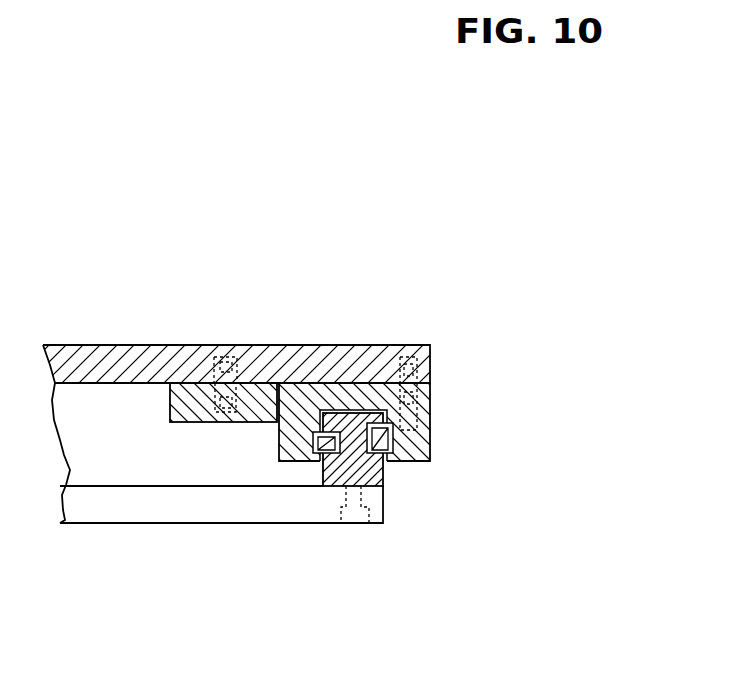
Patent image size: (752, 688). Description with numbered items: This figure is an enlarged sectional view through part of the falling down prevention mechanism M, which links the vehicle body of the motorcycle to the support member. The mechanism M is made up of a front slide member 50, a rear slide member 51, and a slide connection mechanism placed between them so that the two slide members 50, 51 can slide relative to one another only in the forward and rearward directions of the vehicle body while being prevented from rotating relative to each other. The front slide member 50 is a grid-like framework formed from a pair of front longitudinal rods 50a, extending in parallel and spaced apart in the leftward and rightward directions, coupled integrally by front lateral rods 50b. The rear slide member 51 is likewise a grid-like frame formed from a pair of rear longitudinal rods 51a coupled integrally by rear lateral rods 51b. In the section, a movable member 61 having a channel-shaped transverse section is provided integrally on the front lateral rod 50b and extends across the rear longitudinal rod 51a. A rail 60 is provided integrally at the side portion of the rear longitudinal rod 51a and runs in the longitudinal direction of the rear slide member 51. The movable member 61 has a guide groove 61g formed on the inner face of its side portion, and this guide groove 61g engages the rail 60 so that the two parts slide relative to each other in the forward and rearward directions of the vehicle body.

The falling down prevention mechanism M is at (355, 228).
The front slide member 50 is at (213, 303).
The front longitudinal rods 50a is at (190, 402).
The front lateral rods 50b is at (117, 363).
The rear slide member 51 is at (233, 600).
The rear longitudinal rods 51a is at (323, 472).
The rear lateral rods 51b is at (127, 505).
The rails 60 is at (313, 442).
The movable members 61 is at (440, 393).
The guide grooves 61g is at (375, 415).